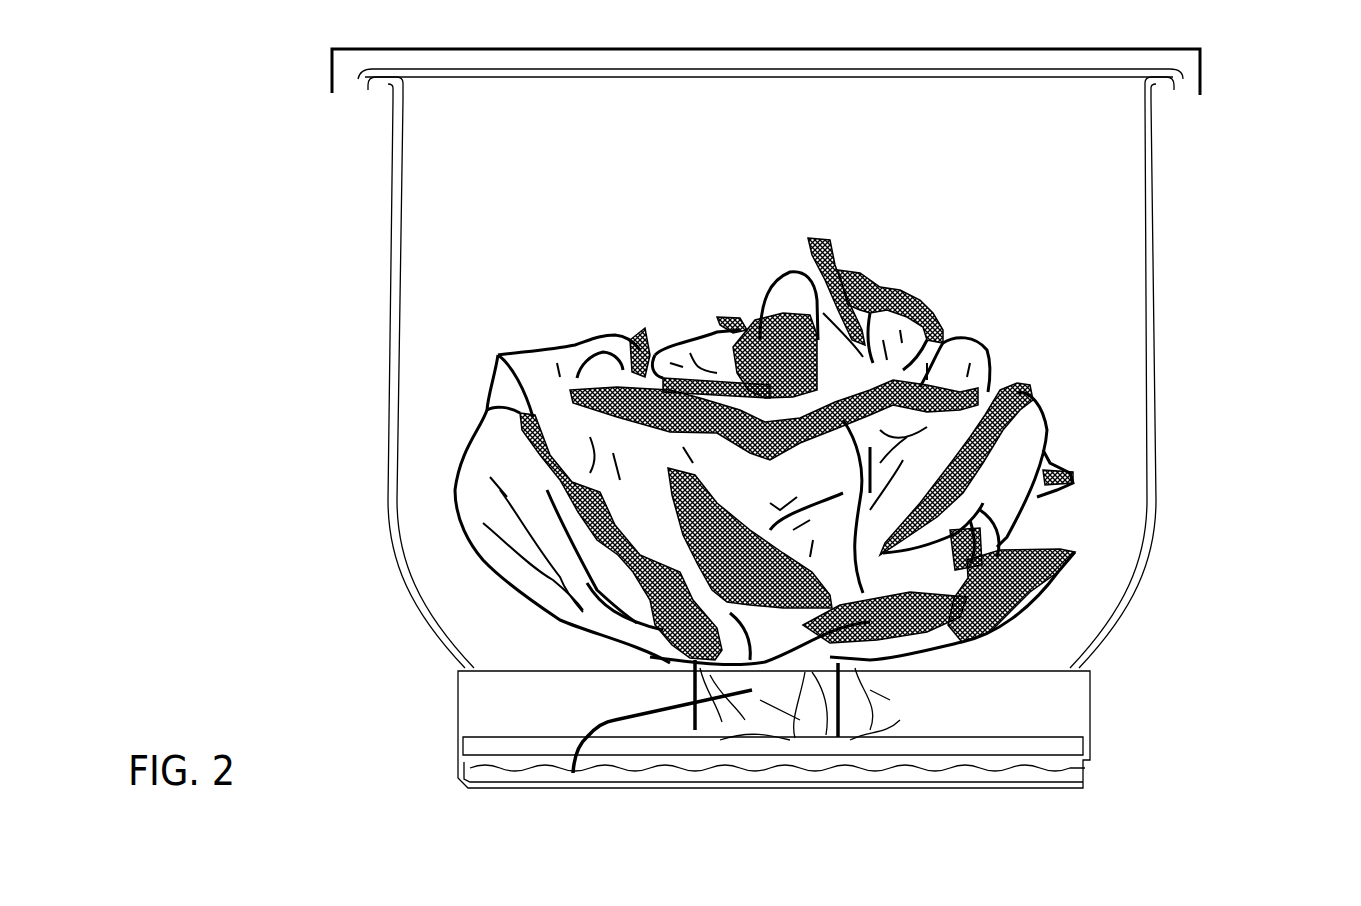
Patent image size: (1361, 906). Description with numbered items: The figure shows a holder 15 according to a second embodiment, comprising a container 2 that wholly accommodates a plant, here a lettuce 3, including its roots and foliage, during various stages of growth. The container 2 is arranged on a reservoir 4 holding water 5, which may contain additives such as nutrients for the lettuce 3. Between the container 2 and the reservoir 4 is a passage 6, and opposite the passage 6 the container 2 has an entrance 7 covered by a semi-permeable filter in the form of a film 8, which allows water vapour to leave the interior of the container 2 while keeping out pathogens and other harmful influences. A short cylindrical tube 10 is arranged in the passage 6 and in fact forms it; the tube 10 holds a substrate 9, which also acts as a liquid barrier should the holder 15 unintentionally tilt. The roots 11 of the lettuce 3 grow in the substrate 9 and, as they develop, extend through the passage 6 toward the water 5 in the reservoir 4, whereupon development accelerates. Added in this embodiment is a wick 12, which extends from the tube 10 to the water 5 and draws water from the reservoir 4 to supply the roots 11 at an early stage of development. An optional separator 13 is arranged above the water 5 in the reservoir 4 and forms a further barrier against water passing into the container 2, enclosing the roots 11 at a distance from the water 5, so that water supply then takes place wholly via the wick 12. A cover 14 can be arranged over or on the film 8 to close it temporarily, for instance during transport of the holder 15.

The container 2 is at (1156, 404).
The lettuce 3 is at (967, 302).
The reservoir 4 is at (1085, 785).
The water 5 is at (1090, 770).
The passage 6 is at (843, 702).
The entrance 7 is at (757, 160).
The film 8 is at (1008, 73).
The substrate 9 is at (827, 682).
The tube 10 is at (697, 683).
The roots 11 is at (728, 722).
The wick 12 is at (587, 730).
The separator 13 is at (1012, 740).
The cover 14 is at (330, 72).
The holder 15 is at (1195, 275).